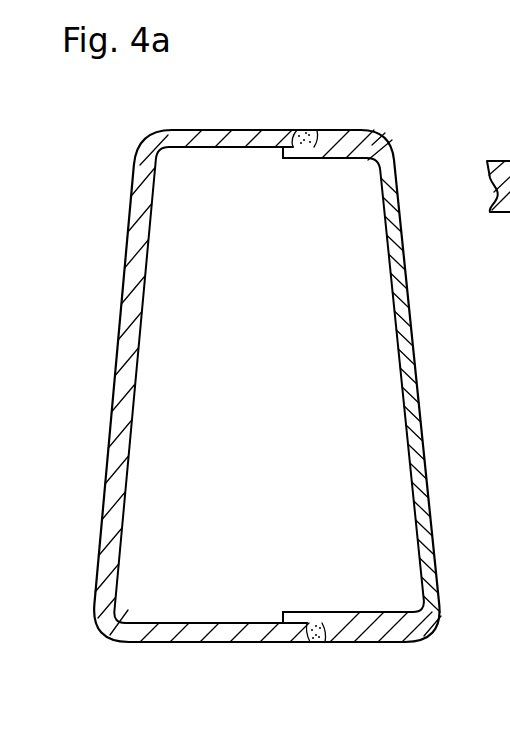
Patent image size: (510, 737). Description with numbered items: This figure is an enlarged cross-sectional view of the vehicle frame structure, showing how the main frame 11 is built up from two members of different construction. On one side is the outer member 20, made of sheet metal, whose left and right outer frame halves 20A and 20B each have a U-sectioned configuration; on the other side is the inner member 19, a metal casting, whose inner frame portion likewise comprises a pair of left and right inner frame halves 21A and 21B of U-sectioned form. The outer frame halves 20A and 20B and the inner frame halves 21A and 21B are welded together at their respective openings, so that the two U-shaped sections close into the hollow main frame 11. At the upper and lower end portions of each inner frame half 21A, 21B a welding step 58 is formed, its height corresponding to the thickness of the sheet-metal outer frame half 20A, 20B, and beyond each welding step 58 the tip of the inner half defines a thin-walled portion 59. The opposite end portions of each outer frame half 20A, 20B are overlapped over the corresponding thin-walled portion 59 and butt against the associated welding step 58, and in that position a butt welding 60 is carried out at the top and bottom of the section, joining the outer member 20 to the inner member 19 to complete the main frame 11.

The main frame 11 is at (127, 255).
The inner member 19 is at (414, 358).
The outer member 20 is at (112, 430).
The left outer frame half 20A is at (134, 328).
The right outer frame half 20B is at (337, 270).
The left inner frame half 21A is at (404, 390).
The right inner frame half 21B is at (341, 307).
The welding step 58 is at (306, 138).
The thin-walled portion 59 is at (292, 146).
The butt welding 60 is at (316, 140).